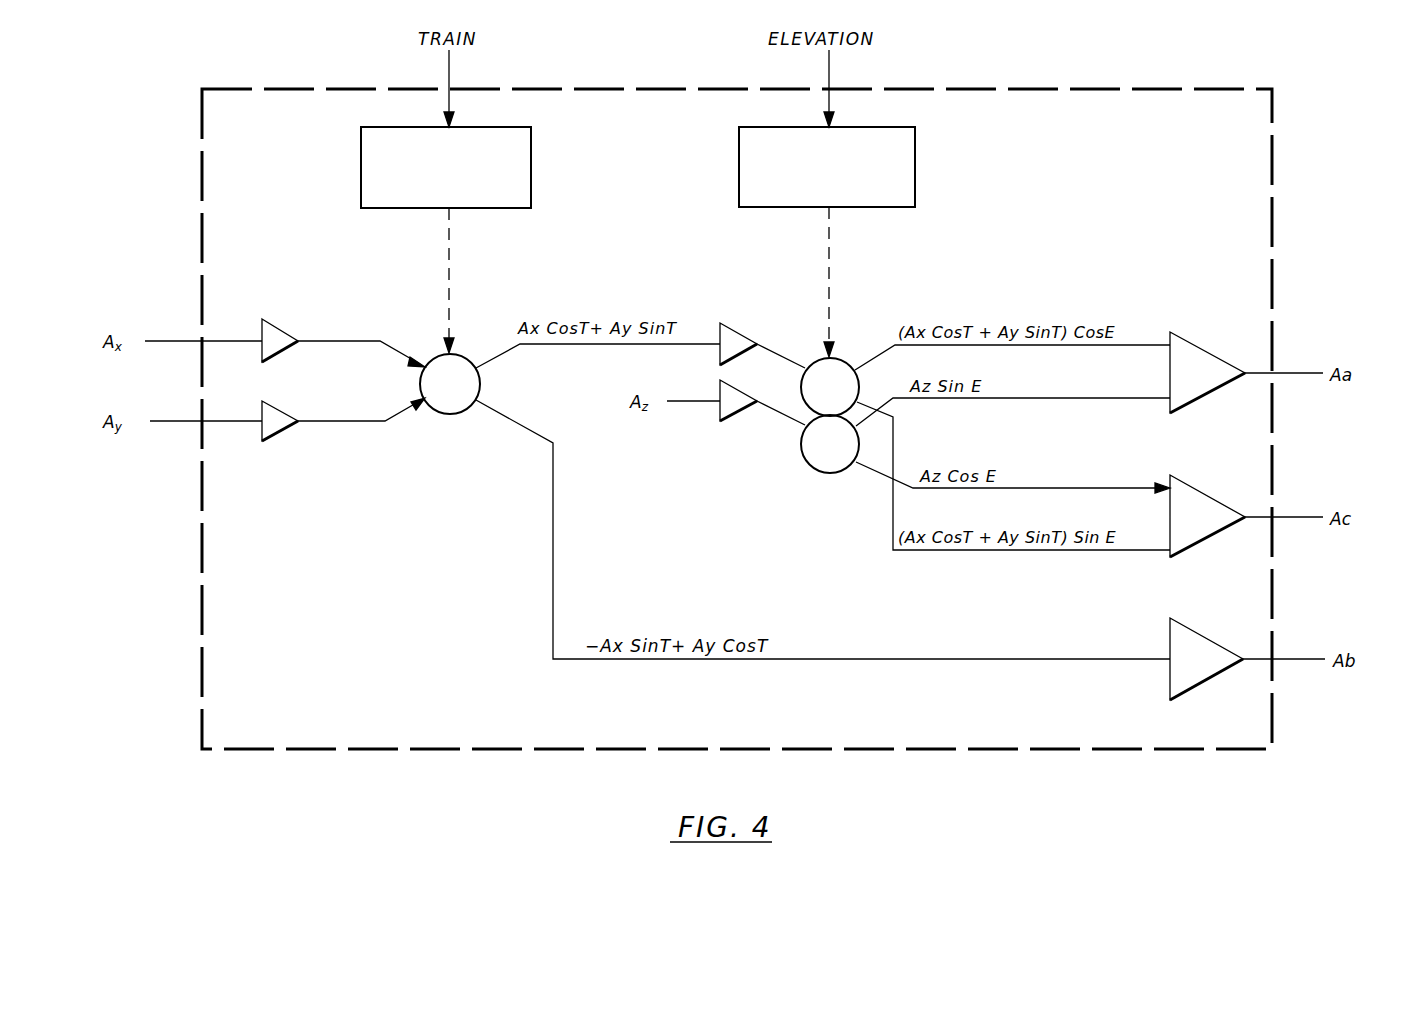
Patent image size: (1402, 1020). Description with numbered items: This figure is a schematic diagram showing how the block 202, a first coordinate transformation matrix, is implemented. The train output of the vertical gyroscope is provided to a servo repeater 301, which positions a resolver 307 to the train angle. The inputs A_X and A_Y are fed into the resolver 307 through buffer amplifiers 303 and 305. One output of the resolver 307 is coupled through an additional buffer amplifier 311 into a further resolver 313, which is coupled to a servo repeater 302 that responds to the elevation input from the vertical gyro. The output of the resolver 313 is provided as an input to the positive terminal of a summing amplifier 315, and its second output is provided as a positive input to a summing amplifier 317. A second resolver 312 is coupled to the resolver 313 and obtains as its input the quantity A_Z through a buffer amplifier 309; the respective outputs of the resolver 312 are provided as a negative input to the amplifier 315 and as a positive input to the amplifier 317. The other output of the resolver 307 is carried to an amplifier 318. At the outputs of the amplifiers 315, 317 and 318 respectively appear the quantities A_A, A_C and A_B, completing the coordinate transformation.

The block 202 is at (1133, 89).
The servo repeater 301 is at (531, 162).
The servo repeater 302 is at (915, 162).
The buffer amplifier 303 is at (284, 326).
The buffer amplifier 305 is at (282, 430).
The resolver 307 is at (450, 414).
The buffer amplifier 309 is at (728, 422).
The buffer amplifier 311 is at (726, 327).
The second resolver 312 is at (826, 473).
The resolver 313 is at (840, 358).
The summing amplifier 315 is at (1200, 348).
The summing amplifier 317 is at (1205, 495).
The amplifier 318 is at (1198, 686).